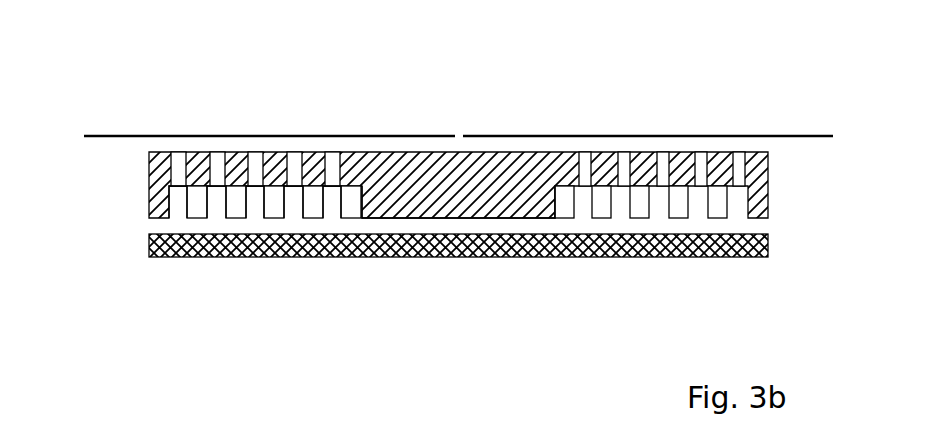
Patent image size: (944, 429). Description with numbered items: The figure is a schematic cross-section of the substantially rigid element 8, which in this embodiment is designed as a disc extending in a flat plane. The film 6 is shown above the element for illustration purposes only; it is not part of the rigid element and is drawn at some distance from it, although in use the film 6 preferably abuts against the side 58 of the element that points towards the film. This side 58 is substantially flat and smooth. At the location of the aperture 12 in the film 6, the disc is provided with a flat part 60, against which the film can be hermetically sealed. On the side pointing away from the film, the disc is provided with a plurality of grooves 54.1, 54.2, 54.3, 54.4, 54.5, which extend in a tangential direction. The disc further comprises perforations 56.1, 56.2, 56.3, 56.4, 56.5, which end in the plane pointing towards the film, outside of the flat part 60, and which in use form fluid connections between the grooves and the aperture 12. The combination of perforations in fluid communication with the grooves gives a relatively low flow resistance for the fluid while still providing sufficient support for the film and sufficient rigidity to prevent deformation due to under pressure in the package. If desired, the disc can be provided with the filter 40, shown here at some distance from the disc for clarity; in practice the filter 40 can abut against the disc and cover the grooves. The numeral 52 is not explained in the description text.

The film 6 is at (273, 136).
The substantially rigid element 8 is at (795, 194).
The aperture 12 is at (457, 125).
The filter 40 is at (620, 246).
The lower side of support layer 52 is at (455, 271).
The groove 54.1 is at (178, 207).
The groove 54.2 is at (217, 207).
The groove 54.3 is at (255, 207).
The groove 54.4 is at (293, 207).
The groove 54.5 is at (332, 207).
The perforation 56.1 is at (584, 160).
The perforation 56.2 is at (623, 160).
The perforation 56.3 is at (663, 160).
The perforation 56.4 is at (701, 160).
The perforation 56.5 is at (739, 160).
The side pointing towards the film 58 is at (365, 115).
The flat part 60 is at (412, 152).